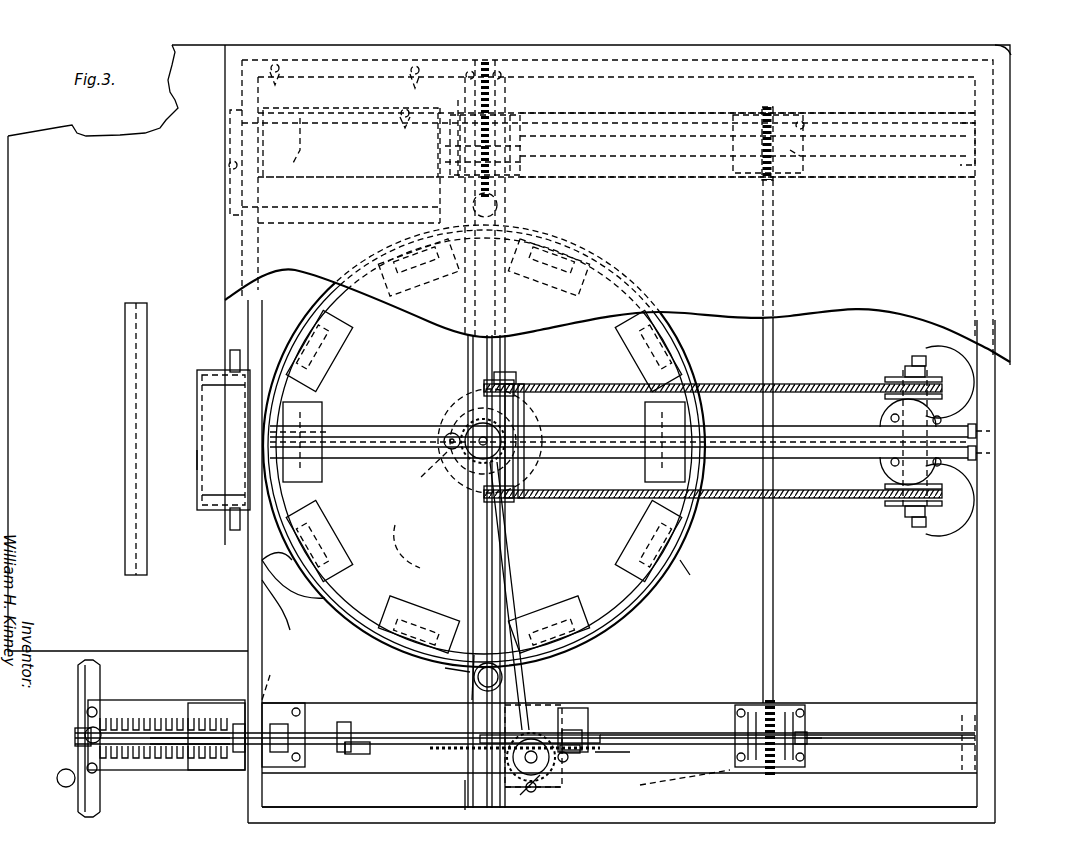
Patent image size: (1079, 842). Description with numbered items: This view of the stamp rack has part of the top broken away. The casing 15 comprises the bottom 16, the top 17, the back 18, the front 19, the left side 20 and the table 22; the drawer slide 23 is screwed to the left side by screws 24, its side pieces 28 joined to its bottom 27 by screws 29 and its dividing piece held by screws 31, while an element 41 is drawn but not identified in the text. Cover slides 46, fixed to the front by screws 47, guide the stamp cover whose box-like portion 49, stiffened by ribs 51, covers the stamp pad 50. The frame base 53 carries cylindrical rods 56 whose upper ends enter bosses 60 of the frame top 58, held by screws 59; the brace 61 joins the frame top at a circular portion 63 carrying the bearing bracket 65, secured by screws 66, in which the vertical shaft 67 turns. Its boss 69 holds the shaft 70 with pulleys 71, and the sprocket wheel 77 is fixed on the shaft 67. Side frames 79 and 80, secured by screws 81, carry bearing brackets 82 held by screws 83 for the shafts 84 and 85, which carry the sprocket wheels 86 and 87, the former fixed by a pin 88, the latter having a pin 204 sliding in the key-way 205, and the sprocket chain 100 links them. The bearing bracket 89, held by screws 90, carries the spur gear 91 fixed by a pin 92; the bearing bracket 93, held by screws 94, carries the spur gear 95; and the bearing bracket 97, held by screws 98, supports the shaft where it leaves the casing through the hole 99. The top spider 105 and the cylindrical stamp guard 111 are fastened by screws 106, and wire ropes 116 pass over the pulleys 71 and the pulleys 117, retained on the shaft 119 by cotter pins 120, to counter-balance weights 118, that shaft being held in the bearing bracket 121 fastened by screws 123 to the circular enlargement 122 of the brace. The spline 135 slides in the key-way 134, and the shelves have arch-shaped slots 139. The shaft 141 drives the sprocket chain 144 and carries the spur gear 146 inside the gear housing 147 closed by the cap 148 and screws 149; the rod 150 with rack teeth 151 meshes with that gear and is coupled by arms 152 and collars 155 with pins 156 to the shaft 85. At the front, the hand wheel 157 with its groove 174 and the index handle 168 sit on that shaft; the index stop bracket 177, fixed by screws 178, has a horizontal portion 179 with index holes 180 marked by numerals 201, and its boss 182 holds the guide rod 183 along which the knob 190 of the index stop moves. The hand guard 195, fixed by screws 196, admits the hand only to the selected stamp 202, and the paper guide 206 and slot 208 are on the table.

The casing 15 is at (1012, 50).
The bottom 16 is at (870, 640).
The top 17 is at (1010, 260).
The back 18 is at (995, 585).
The front 19 is at (248, 605).
The left side 20 is at (884, 82).
The table 22 is at (128, 348).
The drawer slide 23 is at (372, 222).
The screws 24 is at (408, 80).
The bottom 27 is at (772, 812).
The side pieces 28 is at (395, 118).
The screws 29 is at (456, 240).
The screws 31 is at (406, 128).
The side bracket 41 is at (228, 165).
The cover slides 46 is at (230, 528).
The screws 47 is at (230, 354).
The box-like portion 49 is at (223, 440).
The stamp pad 50 is at (197, 460).
The strengthening ribs 51 is at (206, 390).
The frame base 53 is at (445, 662).
The cylindrical rods 56 is at (505, 672).
The frame top 58 is at (505, 565).
The screws 59 is at (465, 797).
The bosses 60 is at (468, 185).
The brace 61 is at (828, 426).
The circular portion 63 is at (465, 470).
The bearing bracket 65 is at (450, 405).
The screws 66 is at (445, 450).
The vertical shaft 67 is at (522, 420).
The boss 69 is at (524, 470).
The shaft 70 is at (512, 372).
The pulleys 71 is at (520, 500).
The sprocket wheel 77 is at (430, 484).
The side frame 79 is at (893, 119).
The side frame 80 is at (858, 706).
The screws 81 is at (958, 160).
The bearing brackets 82 is at (810, 734).
The screws 83 is at (802, 706).
The shaft 84 is at (700, 130).
The shaft 85 is at (632, 732).
The sprocket wheel 86 is at (768, 108).
The sprocket wheel 87 is at (282, 158).
The pin 88 is at (805, 128).
The bearing bracket 89 is at (515, 116).
The screws 90 is at (530, 165).
The spur gear 91 is at (478, 108).
The pin 92 is at (530, 150).
The bearing bracket 93 is at (632, 754).
The screws 94 is at (605, 748).
The spur gear 95 is at (655, 787).
The bearing bracket 97 is at (285, 710).
The screws 98 is at (300, 706).
The hole 99 is at (275, 672).
The sprocket chain 100 is at (773, 600).
The top spider 105 is at (484, 446).
The screws 106 is at (440, 612).
The stamp guard 111 is at (677, 566).
The wire ropes 116 is at (745, 498).
The pulleys 117 is at (897, 504).
The counter-balance weight 118 is at (950, 441).
The shaft 119 is at (925, 527).
The cotter pins 120 is at (918, 357).
The bearing bracket 121 is at (880, 424).
The circular enlargement 122 is at (900, 420).
The screws 123 is at (945, 516).
The key-way 134 is at (440, 422).
The spline 135 is at (382, 430).
The slots 139 is at (399, 543).
The shaft 141 is at (555, 777).
The sprocket chain 144 is at (545, 674).
The spur gear 146 is at (525, 793).
The gear housing 147 is at (545, 791).
The cap 148 is at (550, 796).
The screws 149 is at (570, 760).
The cylindrical rod 150 is at (606, 734).
The rack teeth 151 is at (370, 752).
The arms 152 is at (575, 722).
The collars 155 is at (582, 749).
The pins 156 is at (345, 752).
The hand wheel 157 is at (110, 687).
The index handle 168 is at (66, 787).
The groove 174 is at (100, 812).
The index stop bracket 177 is at (240, 700).
The screws 178 is at (245, 762).
The horizontal portion 179 is at (95, 770).
The index holes 180 is at (190, 746).
The boss 182 is at (232, 762).
The index stop guide rod 183 is at (215, 760).
The knob 190 is at (100, 742).
The hand guard 195 is at (325, 600).
The screws 196 is at (292, 629).
The numerals 201 is at (160, 710).
The stamp 202 is at (484, 442).
The pin 204 is at (822, 740).
The key-way 205 is at (730, 733).
The paper guide 206 is at (147, 312).
The slot 208 is at (125, 363).